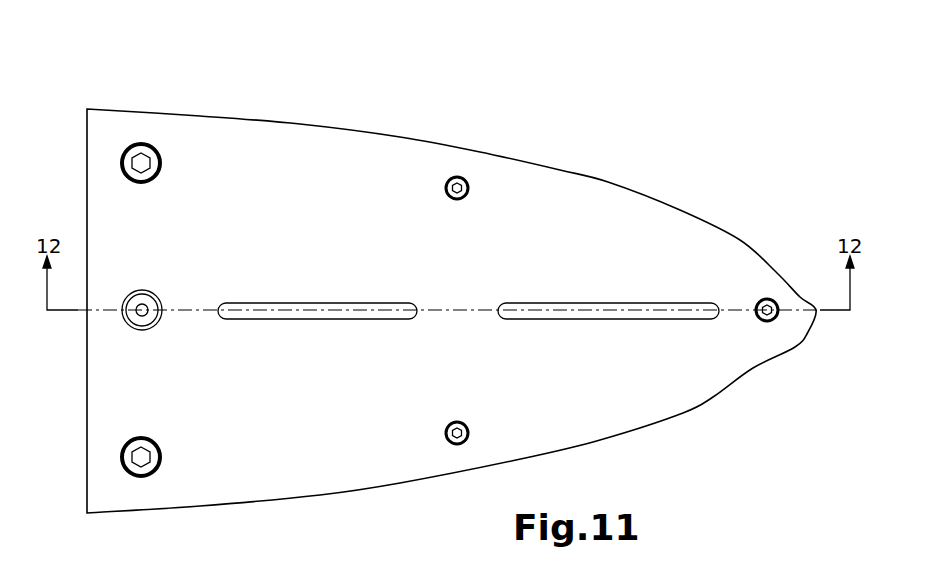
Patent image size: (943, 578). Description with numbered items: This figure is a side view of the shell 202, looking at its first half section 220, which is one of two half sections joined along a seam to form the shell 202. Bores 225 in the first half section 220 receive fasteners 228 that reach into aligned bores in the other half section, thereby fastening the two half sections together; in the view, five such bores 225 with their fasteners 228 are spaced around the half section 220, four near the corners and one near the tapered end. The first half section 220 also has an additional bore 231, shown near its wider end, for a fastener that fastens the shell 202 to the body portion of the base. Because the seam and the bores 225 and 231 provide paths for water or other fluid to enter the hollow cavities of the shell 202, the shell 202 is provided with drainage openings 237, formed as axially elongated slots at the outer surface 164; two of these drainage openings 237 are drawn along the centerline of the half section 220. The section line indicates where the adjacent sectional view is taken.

The shell 202 is at (160, 62).
The first half section 220 is at (595, 214).
The bores 225 is at (130, 148).
The fasteners 228 is at (141, 163).
The additional bore 231 is at (142, 322).
The drainage openings 237 is at (288, 302).
The outer surface 164 is at (655, 395).